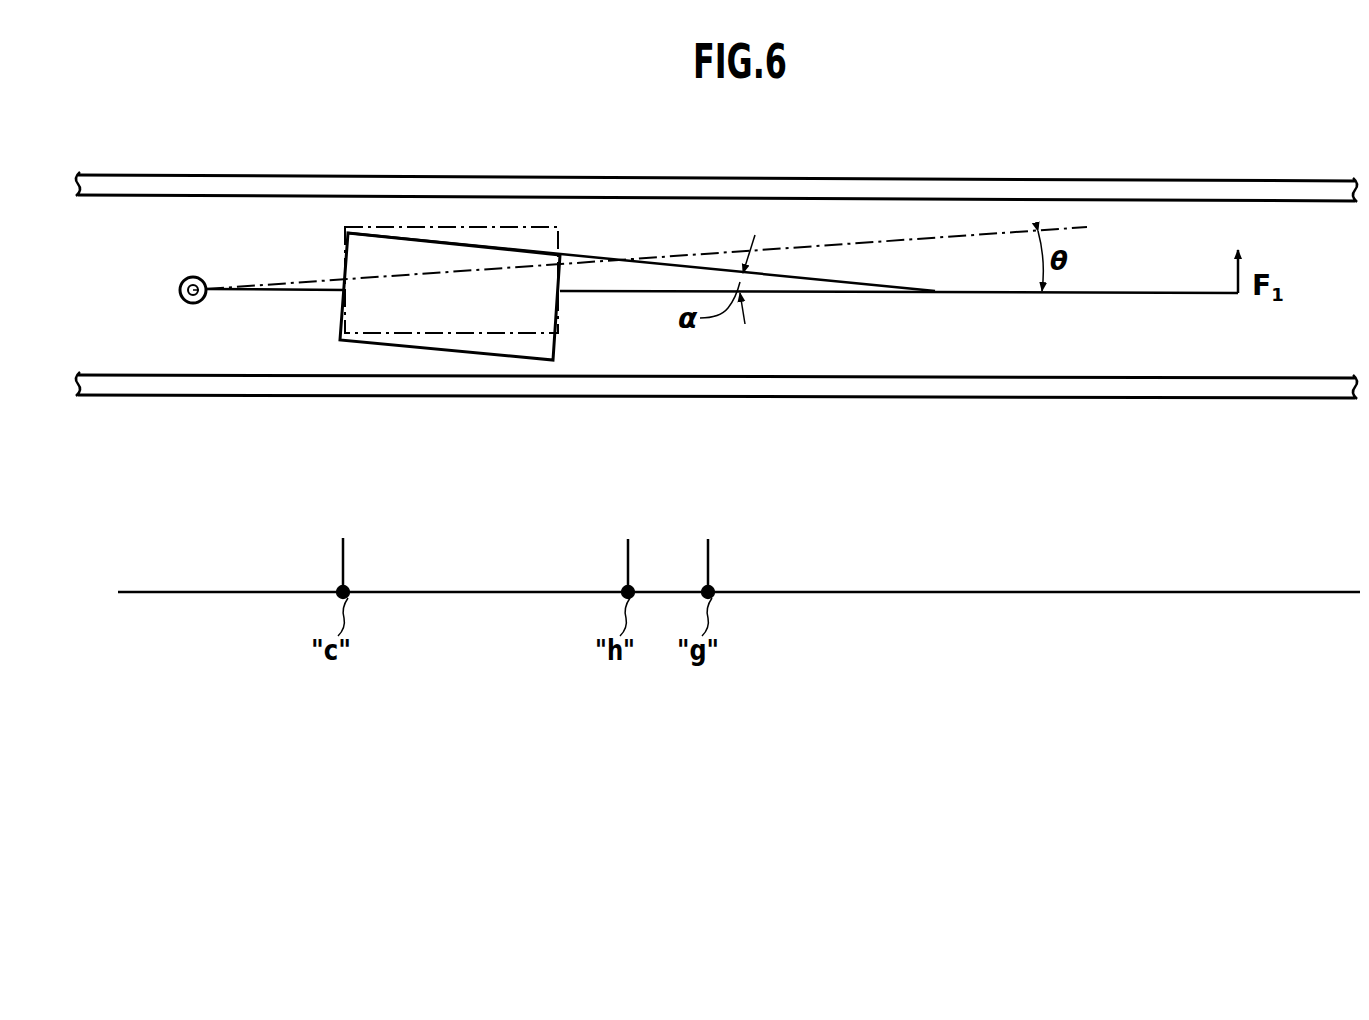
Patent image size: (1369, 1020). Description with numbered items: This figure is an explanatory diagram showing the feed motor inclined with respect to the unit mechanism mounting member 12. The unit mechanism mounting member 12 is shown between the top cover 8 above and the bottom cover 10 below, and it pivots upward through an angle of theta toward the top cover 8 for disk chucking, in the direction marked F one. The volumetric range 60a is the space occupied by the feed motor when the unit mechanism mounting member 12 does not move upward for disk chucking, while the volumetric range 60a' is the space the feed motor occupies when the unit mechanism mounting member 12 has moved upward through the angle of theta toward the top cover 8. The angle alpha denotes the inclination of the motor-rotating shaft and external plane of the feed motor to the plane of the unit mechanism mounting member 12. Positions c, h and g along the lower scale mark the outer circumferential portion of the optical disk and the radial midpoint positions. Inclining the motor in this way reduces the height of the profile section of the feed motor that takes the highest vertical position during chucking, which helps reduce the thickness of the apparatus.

The top cover 8 is at (1283, 180).
The bottom cover 10 is at (1263, 399).
The unit mechanism mounting member 12 is at (283, 294).
The volumetric range of the feed motor 60a is at (450, 345).
The volumetric range of the feed motor in chucking position 60a' is at (451, 234).